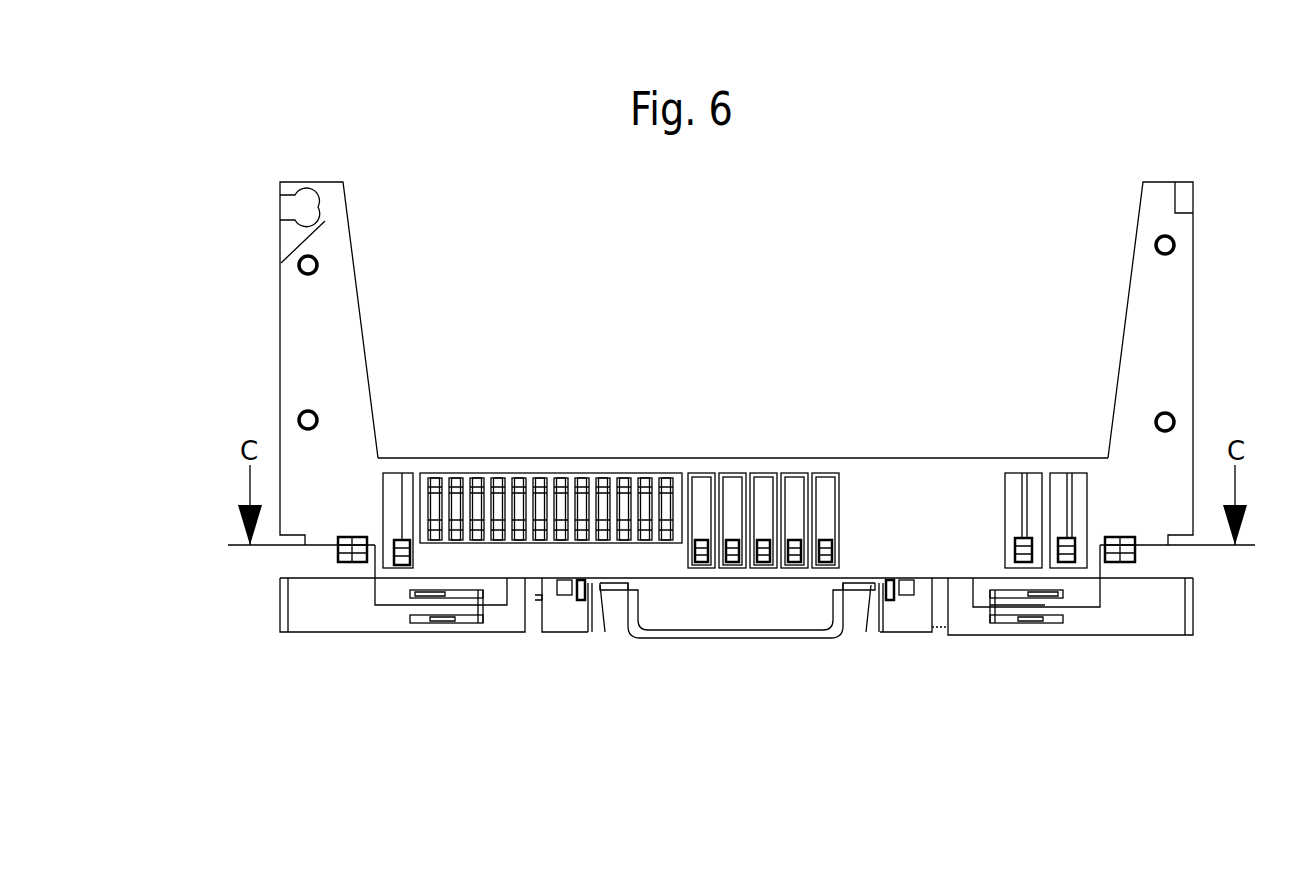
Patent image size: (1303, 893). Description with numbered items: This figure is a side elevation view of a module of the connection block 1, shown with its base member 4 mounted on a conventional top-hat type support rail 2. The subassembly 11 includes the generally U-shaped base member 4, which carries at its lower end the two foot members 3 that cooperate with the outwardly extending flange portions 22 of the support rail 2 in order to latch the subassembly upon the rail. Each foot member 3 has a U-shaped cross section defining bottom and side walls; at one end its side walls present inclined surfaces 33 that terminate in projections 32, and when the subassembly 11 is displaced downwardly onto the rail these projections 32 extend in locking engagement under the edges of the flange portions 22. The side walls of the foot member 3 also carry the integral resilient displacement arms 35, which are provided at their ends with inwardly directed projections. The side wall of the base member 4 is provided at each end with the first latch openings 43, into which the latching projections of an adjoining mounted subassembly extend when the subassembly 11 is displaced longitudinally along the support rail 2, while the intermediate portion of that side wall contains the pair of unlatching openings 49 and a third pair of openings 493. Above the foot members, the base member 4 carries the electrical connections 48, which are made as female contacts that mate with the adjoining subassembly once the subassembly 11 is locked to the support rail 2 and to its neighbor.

The connection block 1 is at (373, 145).
The base member 4 is at (325, 325).
The subassembly 11 is at (1155, 273).
The electrical connections 48 is at (1066, 545).
The first latch openings 43 is at (350, 560).
The foot member 3 is at (1087, 595).
The resilient displacement arms 35 is at (463, 607).
The unlatching openings 49 is at (560, 597).
The third pair of openings 493 is at (581, 600).
The projections 32 is at (600, 595).
The inclined surfaces 33 is at (607, 595).
The support rail 2 is at (762, 634).
The flange portions 22 is at (792, 630).